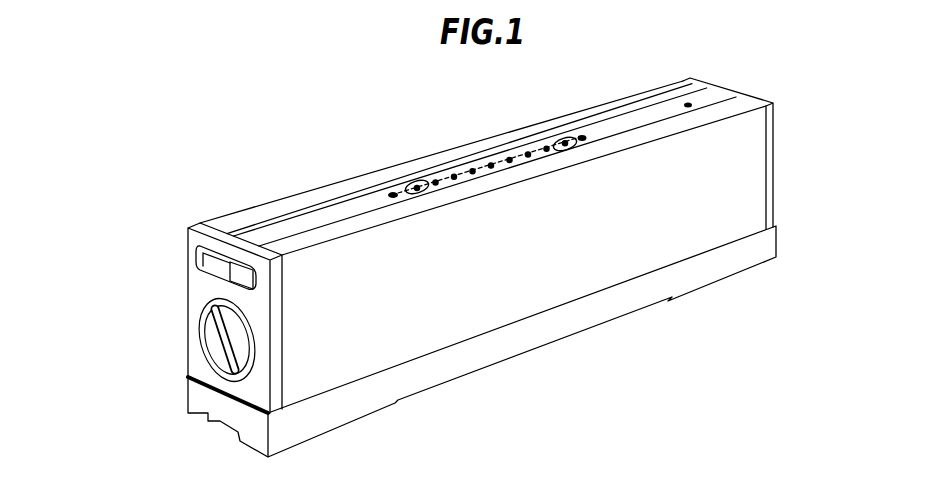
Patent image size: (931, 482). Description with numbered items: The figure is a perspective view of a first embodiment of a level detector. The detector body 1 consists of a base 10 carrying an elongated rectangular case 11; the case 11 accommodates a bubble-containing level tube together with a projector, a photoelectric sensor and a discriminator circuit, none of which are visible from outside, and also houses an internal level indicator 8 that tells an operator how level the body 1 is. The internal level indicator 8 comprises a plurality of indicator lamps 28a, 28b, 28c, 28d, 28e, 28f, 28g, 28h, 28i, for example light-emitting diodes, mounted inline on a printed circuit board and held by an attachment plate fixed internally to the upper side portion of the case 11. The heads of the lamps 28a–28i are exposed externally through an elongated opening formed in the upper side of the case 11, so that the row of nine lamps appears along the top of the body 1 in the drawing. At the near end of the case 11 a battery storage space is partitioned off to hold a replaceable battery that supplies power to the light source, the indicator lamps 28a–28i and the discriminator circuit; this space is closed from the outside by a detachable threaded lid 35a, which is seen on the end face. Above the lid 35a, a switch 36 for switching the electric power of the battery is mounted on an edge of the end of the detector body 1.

The body 1 is at (432, 259).
The internal level indicator 8 is at (472, 163).
The base 10 is at (508, 340).
The elongated rectangular case 11 is at (567, 268).
The indicator lamp 28a is at (416, 184).
The indicator lamp 28b is at (434, 180).
The indicator lamp 28c is at (454, 180).
The indicator lamp 28d is at (473, 174).
The indicator lamp 28e is at (492, 168).
The indicator lamp 28f is at (509, 158).
The indicator lamp 28g is at (531, 158).
The indicator lamp 28h is at (547, 147).
The indicator lamp 28i is at (573, 150).
The detachable threaded lid 35a is at (213, 345).
The switch 36 is at (237, 277).